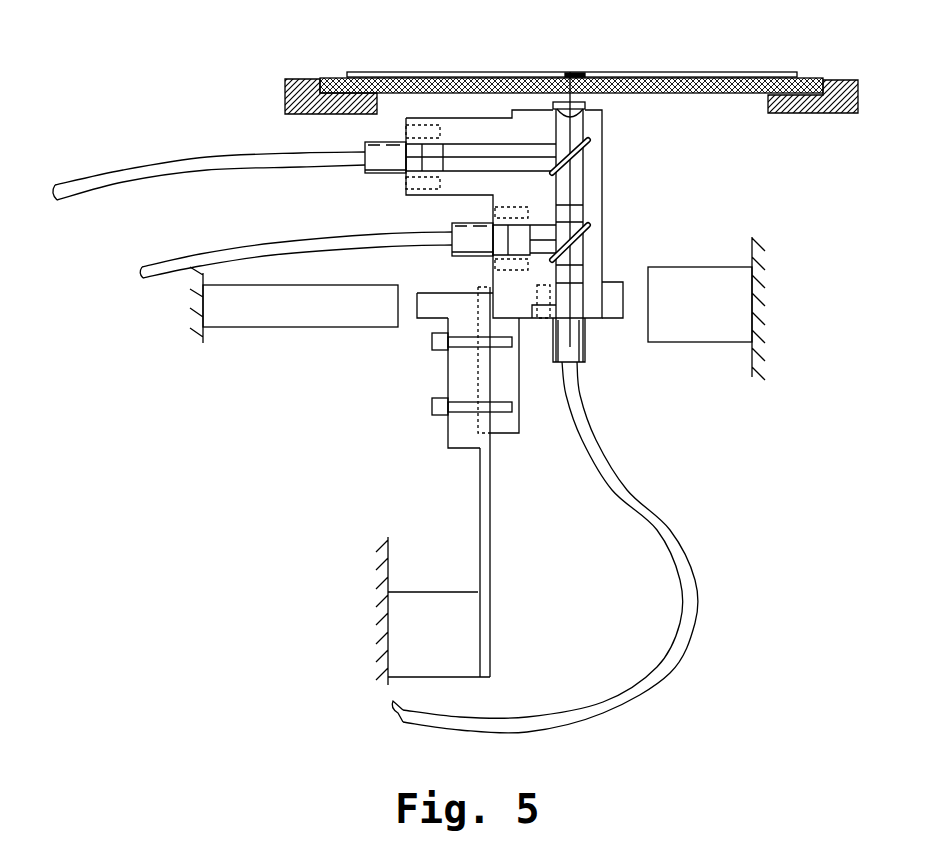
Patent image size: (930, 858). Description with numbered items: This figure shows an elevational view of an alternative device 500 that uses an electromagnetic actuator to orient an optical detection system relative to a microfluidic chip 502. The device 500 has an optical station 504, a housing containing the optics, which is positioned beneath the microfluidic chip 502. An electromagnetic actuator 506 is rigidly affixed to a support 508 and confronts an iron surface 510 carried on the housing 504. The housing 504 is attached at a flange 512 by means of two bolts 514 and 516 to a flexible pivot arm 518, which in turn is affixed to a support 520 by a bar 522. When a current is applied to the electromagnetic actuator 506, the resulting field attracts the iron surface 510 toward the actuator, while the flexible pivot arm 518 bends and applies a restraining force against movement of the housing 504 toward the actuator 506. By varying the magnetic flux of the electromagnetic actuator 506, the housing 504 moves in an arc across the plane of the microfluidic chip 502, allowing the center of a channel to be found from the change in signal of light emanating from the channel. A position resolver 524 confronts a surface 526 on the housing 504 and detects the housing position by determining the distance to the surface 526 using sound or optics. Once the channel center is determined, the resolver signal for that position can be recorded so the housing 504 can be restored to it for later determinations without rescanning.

The device 500 is at (455, 386).
The microfluidic chip 502 is at (740, 73).
The optical station 504 is at (603, 157).
The electromagnetic actuator 506 is at (310, 322).
The support 508 is at (203, 343).
The iron surface 510 is at (417, 301).
The flange 512 is at (520, 405).
The bolt 514 is at (430, 342).
The bolt 516 is at (430, 407).
The flexible pivot arm 518 is at (491, 548).
The support 520 is at (389, 578).
The bar 522 is at (455, 677).
The position resolver 524 is at (684, 336).
The surface 526 is at (623, 285).